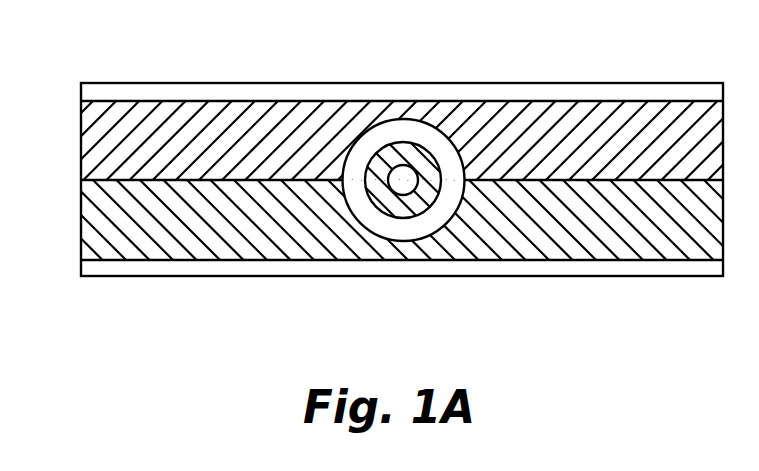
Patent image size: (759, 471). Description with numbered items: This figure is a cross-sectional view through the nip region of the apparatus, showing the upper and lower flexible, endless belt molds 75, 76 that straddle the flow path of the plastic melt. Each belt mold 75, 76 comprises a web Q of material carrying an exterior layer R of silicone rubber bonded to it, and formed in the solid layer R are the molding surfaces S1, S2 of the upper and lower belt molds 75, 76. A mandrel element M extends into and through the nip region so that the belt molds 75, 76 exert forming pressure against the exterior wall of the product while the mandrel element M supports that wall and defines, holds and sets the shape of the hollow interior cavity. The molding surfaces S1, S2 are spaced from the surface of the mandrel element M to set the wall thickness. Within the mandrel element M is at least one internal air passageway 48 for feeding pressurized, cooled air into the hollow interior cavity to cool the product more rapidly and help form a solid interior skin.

The web Q is at (135, 87).
The exterior layer of silicone rubber material R is at (373, 186).
The molding surface S1 is at (95, 180).
The molding surface S2 is at (183, 178).
The mandrel element M is at (410, 208).
The internal air passageway 48 is at (405, 170).
The belt mold 75 is at (618, 127).
The belt mold 76 is at (623, 237).